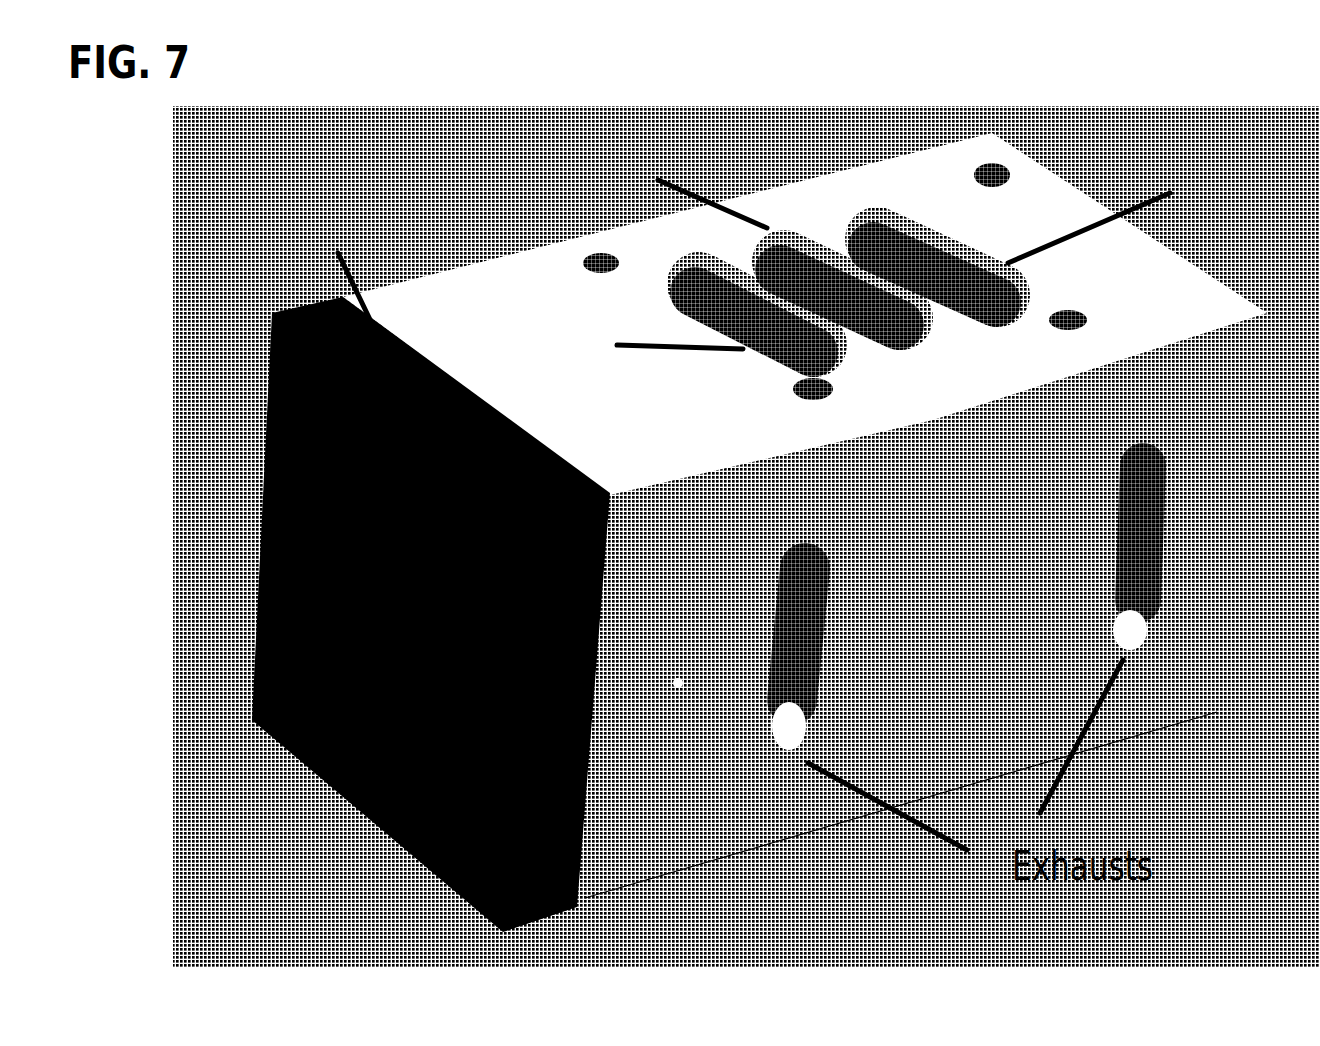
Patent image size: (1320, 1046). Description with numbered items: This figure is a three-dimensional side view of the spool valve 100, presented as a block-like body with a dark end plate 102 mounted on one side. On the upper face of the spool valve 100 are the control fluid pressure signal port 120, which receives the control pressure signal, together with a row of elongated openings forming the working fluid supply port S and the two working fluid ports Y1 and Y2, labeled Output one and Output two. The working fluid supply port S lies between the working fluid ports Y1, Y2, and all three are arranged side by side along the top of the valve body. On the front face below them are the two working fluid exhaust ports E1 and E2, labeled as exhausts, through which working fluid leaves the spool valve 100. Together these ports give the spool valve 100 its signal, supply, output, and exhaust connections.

The spool valve 100 is at (1243, 865).
The end plate / cover 102 is at (562, 887).
The control fluid pressure signal port 120 is at (387, 318).
The working fluid supply port S is at (803, 240).
The working fluid port Y1 is at (888, 233).
The working fluid port Y2 is at (697, 265).
The working fluid exhaust port E1 is at (1132, 622).
The working fluid exhaust port E2 is at (787, 732).